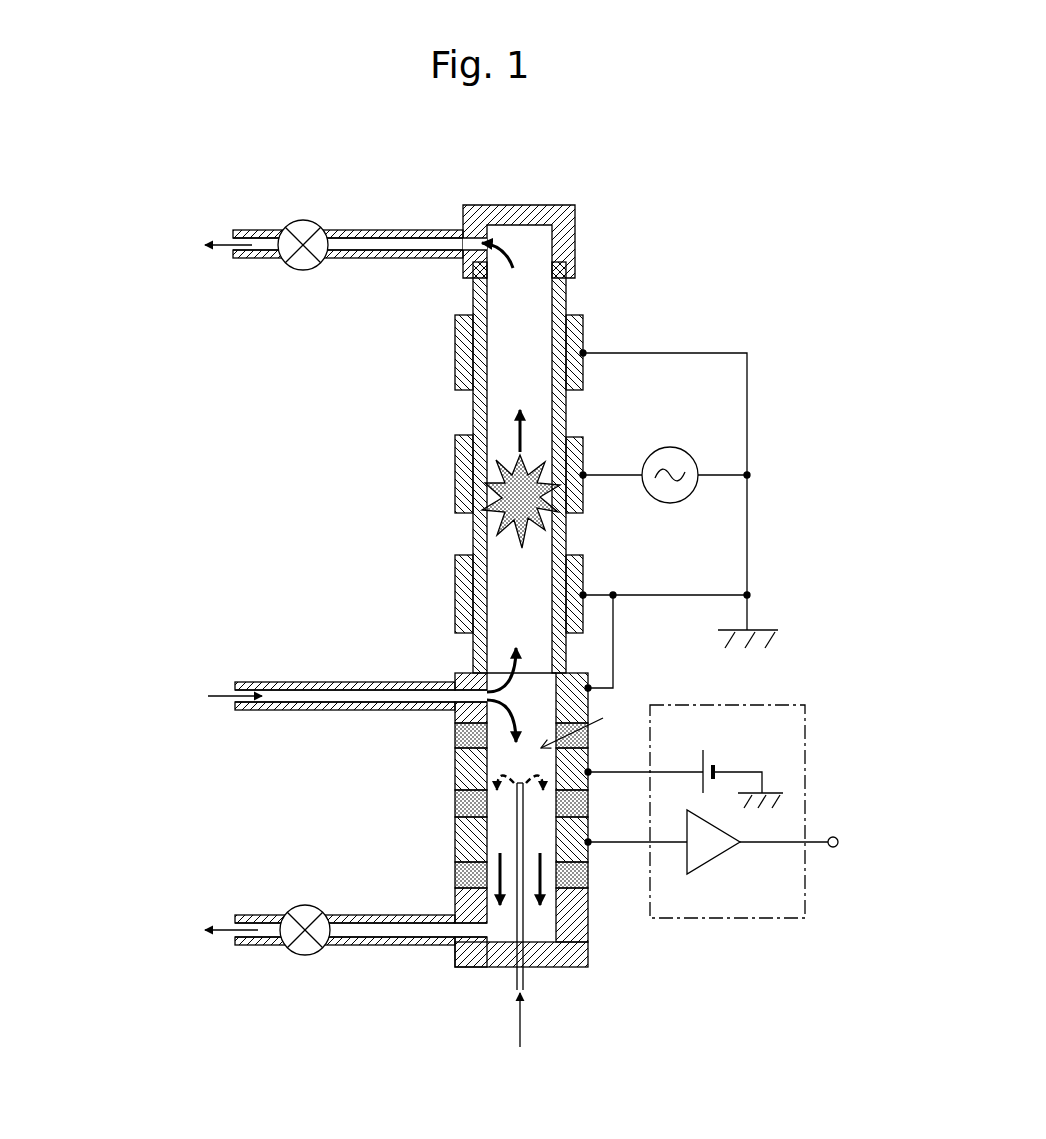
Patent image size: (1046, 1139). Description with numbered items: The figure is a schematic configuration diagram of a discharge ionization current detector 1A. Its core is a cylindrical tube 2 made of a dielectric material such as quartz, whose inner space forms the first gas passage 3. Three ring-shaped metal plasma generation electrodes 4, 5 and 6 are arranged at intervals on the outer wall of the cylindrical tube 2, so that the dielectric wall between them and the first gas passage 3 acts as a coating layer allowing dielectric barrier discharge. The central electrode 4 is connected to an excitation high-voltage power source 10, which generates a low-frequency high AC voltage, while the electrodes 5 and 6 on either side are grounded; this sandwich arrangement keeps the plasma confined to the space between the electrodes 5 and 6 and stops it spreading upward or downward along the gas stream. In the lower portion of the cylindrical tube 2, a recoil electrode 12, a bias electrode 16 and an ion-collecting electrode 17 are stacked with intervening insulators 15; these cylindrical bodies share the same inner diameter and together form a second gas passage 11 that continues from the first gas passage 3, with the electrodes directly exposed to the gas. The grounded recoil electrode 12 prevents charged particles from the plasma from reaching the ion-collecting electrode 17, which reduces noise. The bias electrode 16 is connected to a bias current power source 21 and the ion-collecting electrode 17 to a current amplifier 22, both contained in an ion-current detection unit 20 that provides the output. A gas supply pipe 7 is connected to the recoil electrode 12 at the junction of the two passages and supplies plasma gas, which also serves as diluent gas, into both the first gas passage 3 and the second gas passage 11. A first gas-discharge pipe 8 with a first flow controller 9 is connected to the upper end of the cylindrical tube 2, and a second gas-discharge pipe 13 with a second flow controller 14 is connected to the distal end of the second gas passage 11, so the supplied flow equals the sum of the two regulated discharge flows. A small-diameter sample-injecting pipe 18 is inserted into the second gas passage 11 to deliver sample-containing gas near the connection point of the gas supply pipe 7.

The discharge ionization current detector 1A is at (198, 159).
The cylindrical tube 2 is at (568, 300).
The first gas passage 3 is at (497, 424).
The plasma generation electrode 4 is at (455, 455).
The plasma generation electrode 5 is at (455, 565).
The plasma generation electrode 6 is at (455, 330).
The gas supply pipe 7 is at (282, 682).
The first gas-discharge pipe 8 is at (392, 229).
The first flow controller 9 is at (297, 221).
The excitation high-voltage power source 10 is at (677, 447).
The second gas passage 11 is at (589, 724).
The recoil electrode 12 is at (455, 676).
The second gas-discharge pipe 13 is at (357, 914).
The second flow controller 14 is at (300, 905).
The insulator 15 is at (455, 738).
The bias electrode 16 is at (589, 757).
The ion-collecting electrode 17 is at (589, 827).
The sample-injecting pipe 18 is at (526, 920).
The ion-current detection unit 20 is at (717, 811).
The bias current power source 21 is at (715, 765).
The current amplifier 22 is at (710, 856).